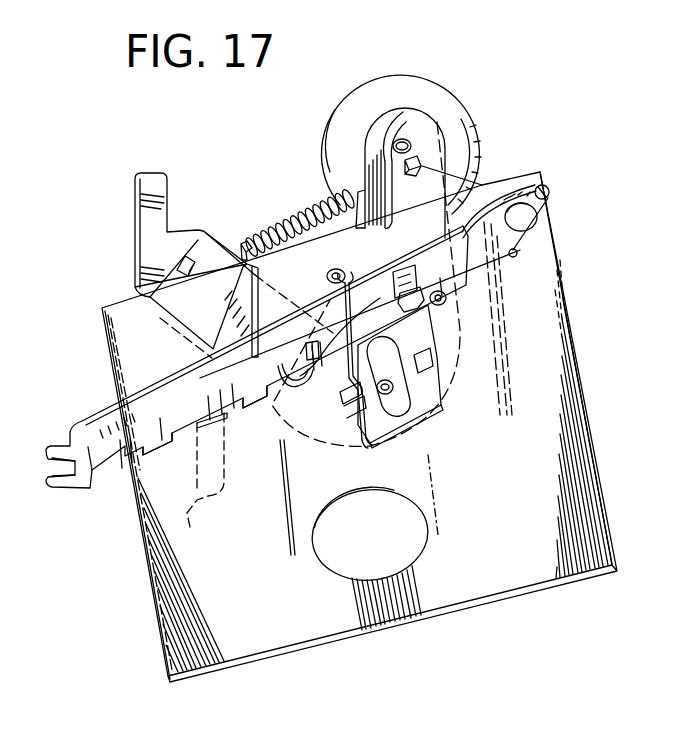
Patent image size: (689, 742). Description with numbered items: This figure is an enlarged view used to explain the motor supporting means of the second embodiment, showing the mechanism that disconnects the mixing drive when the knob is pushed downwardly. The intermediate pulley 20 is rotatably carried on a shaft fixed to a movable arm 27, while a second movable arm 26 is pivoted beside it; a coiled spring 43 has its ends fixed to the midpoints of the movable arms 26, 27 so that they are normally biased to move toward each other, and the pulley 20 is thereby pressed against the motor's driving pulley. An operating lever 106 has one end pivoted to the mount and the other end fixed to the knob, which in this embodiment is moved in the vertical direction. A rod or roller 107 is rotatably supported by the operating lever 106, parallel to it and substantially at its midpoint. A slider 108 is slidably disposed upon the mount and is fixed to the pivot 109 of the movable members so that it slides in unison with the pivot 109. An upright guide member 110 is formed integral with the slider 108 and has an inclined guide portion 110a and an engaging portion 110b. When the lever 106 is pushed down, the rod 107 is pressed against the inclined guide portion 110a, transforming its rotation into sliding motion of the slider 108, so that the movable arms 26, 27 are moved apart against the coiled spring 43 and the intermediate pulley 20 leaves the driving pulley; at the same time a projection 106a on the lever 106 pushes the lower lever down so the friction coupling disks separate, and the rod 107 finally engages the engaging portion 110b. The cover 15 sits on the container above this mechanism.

The cover 15 is at (165, 590).
The intermediate pulley 20 is at (429, 88).
The movable arm 27 is at (428, 137).
The coiled spring 43 is at (298, 211).
The movable arm 26 is at (150, 243).
The pivot 109 is at (367, 262).
The operating lever 106 is at (213, 402).
The projection 106a is at (186, 513).
The rod or roller 107 is at (373, 318).
The slider 108 is at (428, 391).
The upright guide member 110 is at (347, 360).
The inclined guide portion 110a is at (368, 432).
The engaging portion 110b is at (340, 350).